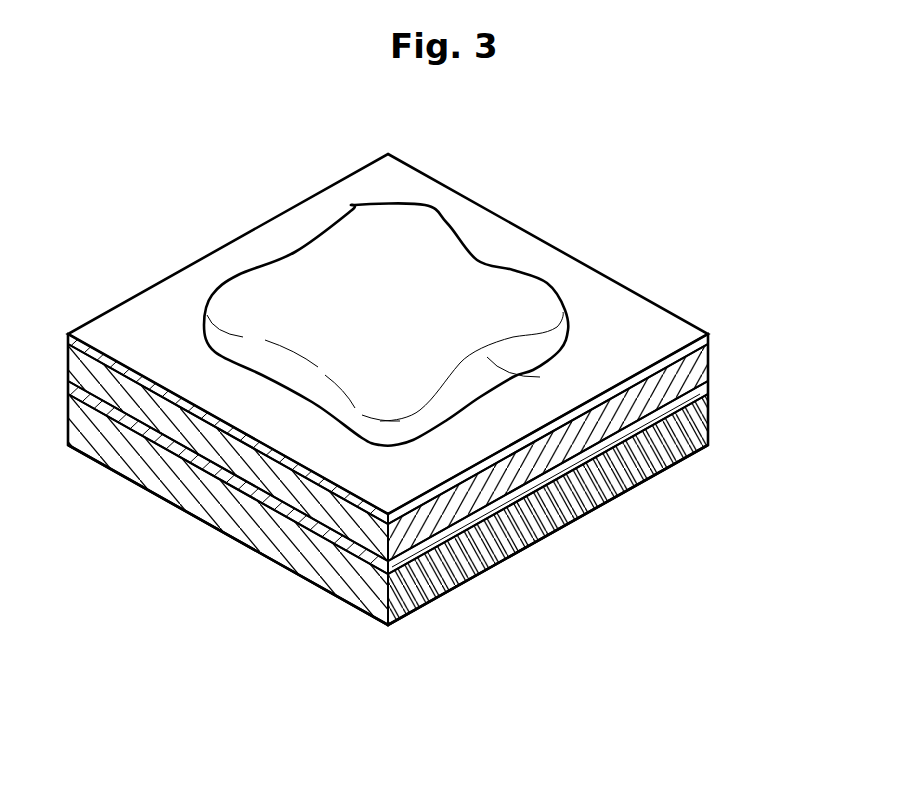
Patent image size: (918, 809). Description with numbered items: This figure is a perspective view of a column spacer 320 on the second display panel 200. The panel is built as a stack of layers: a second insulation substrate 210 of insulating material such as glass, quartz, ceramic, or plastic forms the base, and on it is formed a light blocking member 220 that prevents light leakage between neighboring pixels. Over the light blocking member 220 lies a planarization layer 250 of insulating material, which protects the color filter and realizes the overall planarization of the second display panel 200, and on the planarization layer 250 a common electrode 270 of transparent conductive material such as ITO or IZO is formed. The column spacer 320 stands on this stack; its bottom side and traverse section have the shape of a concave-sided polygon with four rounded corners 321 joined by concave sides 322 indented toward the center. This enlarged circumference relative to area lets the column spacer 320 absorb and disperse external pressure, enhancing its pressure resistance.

The second display panel 200 is at (740, 360).
The second insulation substrate 210 is at (495, 553).
The light blocking member 220 is at (538, 513).
The planarization layer 250 is at (585, 460).
The common electrode 270 is at (626, 406).
The column spacer 320 is at (476, 278).
The corners 321 is at (550, 297).
The concave sides 322 is at (612, 397).